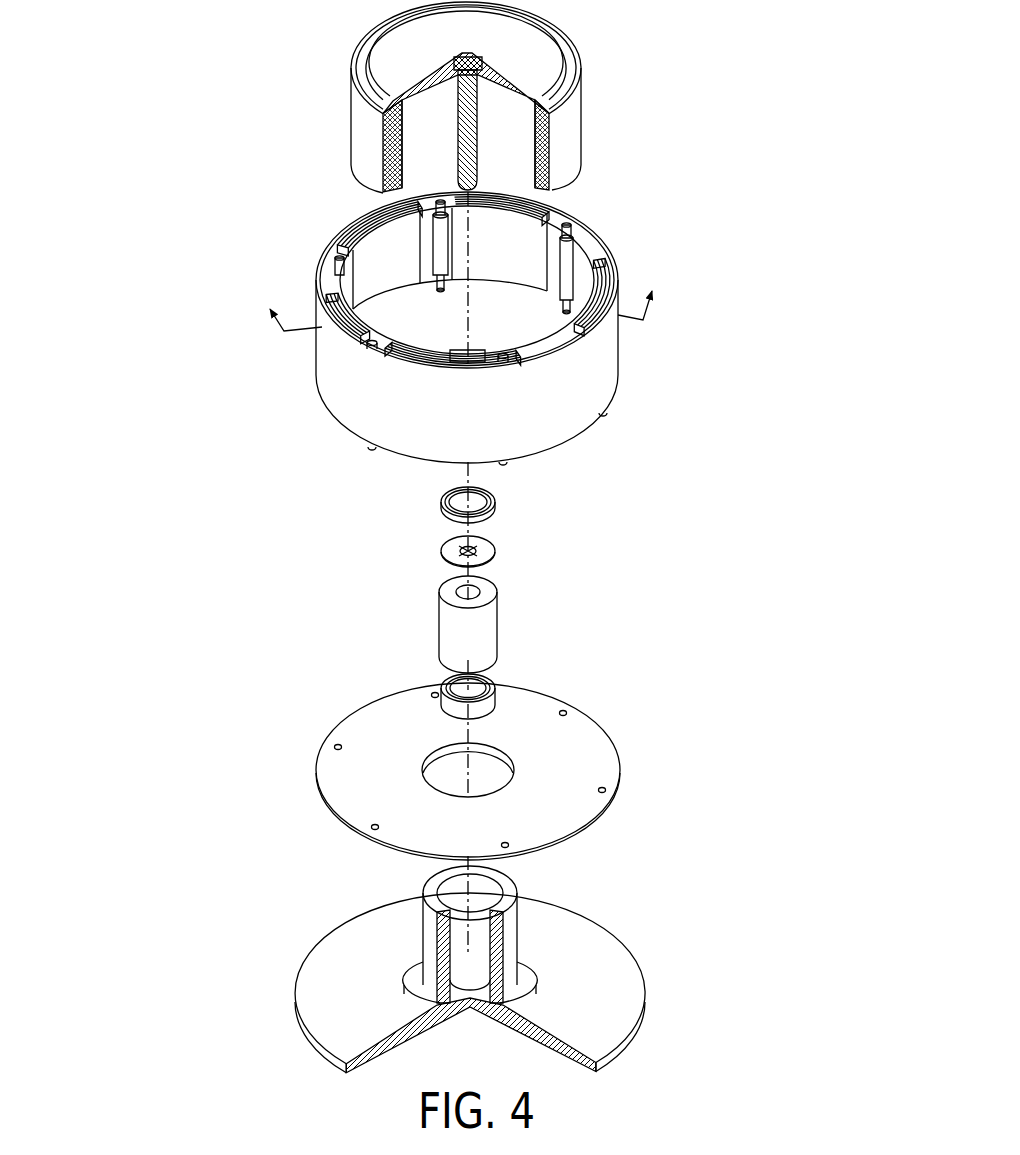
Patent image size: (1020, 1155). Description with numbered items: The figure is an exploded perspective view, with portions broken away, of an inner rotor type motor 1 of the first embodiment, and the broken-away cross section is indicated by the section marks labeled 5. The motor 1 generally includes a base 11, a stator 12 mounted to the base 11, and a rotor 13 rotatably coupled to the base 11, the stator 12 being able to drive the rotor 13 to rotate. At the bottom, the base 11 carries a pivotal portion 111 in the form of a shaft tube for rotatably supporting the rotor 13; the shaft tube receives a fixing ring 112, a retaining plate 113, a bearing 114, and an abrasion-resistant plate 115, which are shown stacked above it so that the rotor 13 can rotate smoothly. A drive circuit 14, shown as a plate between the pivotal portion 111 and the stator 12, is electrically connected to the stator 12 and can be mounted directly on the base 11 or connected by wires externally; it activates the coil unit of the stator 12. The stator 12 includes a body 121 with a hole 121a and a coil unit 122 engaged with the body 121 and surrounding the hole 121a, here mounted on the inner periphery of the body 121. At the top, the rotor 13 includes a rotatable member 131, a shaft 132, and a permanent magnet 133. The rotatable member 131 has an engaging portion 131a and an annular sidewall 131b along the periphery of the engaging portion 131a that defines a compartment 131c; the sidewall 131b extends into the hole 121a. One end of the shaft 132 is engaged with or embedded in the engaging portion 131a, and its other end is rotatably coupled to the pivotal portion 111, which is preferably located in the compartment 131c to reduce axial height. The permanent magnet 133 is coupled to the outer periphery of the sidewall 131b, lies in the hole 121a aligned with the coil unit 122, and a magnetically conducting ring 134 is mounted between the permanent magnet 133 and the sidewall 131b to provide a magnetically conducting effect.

The inner rotor type motor 1 is at (210, 129).
The base 11 is at (610, 960).
The pivotal portion 111 is at (508, 930).
The fixing ring 112 is at (494, 500).
The retaining plate 113 is at (491, 549).
The bearing 114 is at (488, 628).
The abrasion-resistant plate 115 is at (491, 703).
The stator 12 is at (643, 361).
The body 121 is at (333, 355).
The hole 121a is at (380, 313).
The coil unit 122 is at (353, 235).
The rotor 13 is at (594, 51).
The rotatable member 131 is at (695, 68).
The engaging portion 131a is at (520, 70).
The sidewall 131b is at (552, 161).
The compartment 131c is at (520, 137).
The shaft 132 is at (480, 163).
The permanent magnet 133 is at (358, 148).
The magnetically conducting ring 134 is at (360, 71).
The drive circuit 14 is at (596, 745).
The section line of FIG. 5 is at (456, 287).